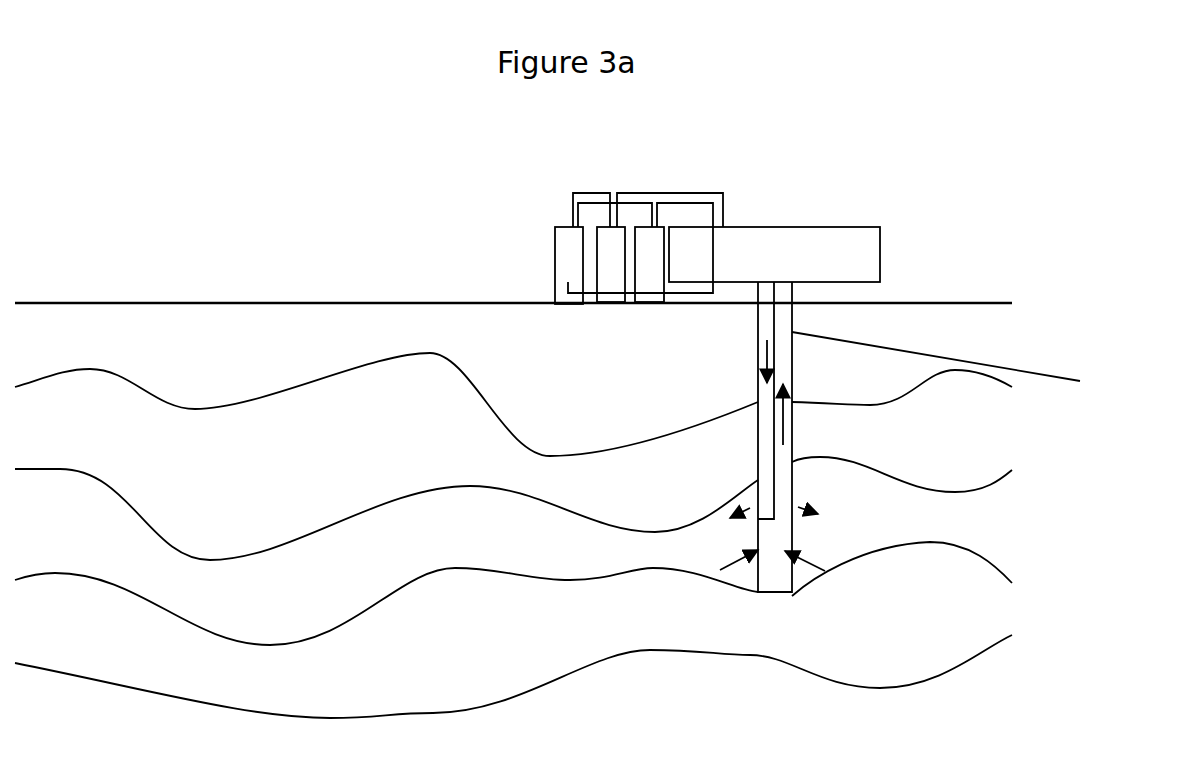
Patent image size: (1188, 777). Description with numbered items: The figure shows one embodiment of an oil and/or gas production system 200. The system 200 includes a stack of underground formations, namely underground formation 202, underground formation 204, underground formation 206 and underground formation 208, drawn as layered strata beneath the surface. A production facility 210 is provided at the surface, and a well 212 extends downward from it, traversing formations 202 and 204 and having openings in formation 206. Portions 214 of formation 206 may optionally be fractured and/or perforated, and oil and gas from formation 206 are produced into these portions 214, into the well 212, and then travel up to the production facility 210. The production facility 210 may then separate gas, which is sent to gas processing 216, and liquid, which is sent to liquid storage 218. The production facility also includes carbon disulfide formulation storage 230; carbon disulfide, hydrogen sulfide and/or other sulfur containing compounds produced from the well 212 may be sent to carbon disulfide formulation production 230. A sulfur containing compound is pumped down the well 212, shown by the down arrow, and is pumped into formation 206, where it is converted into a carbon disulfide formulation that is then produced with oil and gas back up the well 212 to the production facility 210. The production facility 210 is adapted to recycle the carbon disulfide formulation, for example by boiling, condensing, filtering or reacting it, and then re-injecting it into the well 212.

The system 200 is at (395, 243).
The underground formation 202 is at (513, 402).
The underground formation 204 is at (513, 488).
The underground formation 206 is at (513, 569).
The underground formation 208 is at (513, 648).
The production facility 210 is at (774, 409).
The well 212 is at (975, 363).
The portions of formation 214 is at (728, 538).
The gas processing 216 is at (645, 248).
The liquid storage 218 is at (613, 248).
The carbon disulfide formulation storage 230 is at (568, 242).